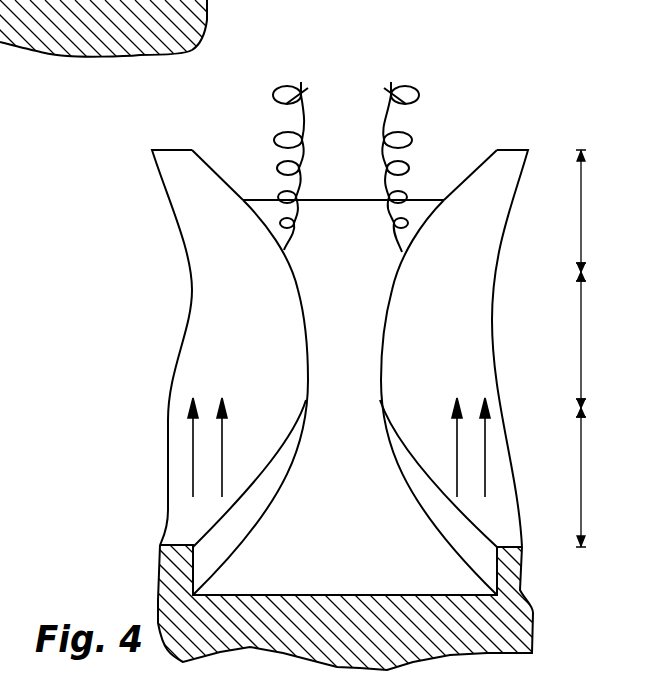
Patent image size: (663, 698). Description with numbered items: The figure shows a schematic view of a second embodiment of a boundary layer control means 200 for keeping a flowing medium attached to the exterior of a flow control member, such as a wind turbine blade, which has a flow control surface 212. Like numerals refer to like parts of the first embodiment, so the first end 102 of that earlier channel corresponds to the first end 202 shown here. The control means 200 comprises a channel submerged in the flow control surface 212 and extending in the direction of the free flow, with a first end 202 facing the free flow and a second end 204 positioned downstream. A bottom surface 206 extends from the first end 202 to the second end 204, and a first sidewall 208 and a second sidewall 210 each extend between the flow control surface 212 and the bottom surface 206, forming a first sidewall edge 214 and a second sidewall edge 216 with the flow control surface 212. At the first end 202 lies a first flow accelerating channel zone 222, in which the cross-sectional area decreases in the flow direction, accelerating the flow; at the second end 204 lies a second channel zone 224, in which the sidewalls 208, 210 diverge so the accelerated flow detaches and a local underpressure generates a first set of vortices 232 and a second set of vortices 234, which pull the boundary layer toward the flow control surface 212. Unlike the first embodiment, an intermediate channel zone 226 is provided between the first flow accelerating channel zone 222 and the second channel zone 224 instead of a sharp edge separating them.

The first end 102 is at (15, 10).
The boundary layer control means 200 is at (337, 82).
The first end 202 is at (453, 575).
The second end 204 is at (427, 207).
The bottom surface 206 is at (360, 490).
The first sidewall 208 is at (283, 465).
The second sidewall 210 is at (390, 427).
The flow control surface 212 is at (190, 193).
The first sidewall edge 214 is at (270, 457).
The second sidewall edge 216 is at (478, 522).
The first flow accelerating channel zone 222 is at (602, 477).
The second channel zone 224 is at (602, 211).
The intermediate channel zone 226 is at (601, 335).
The first set of vortices 232 is at (283, 86).
The second set of vortices 234 is at (404, 86).